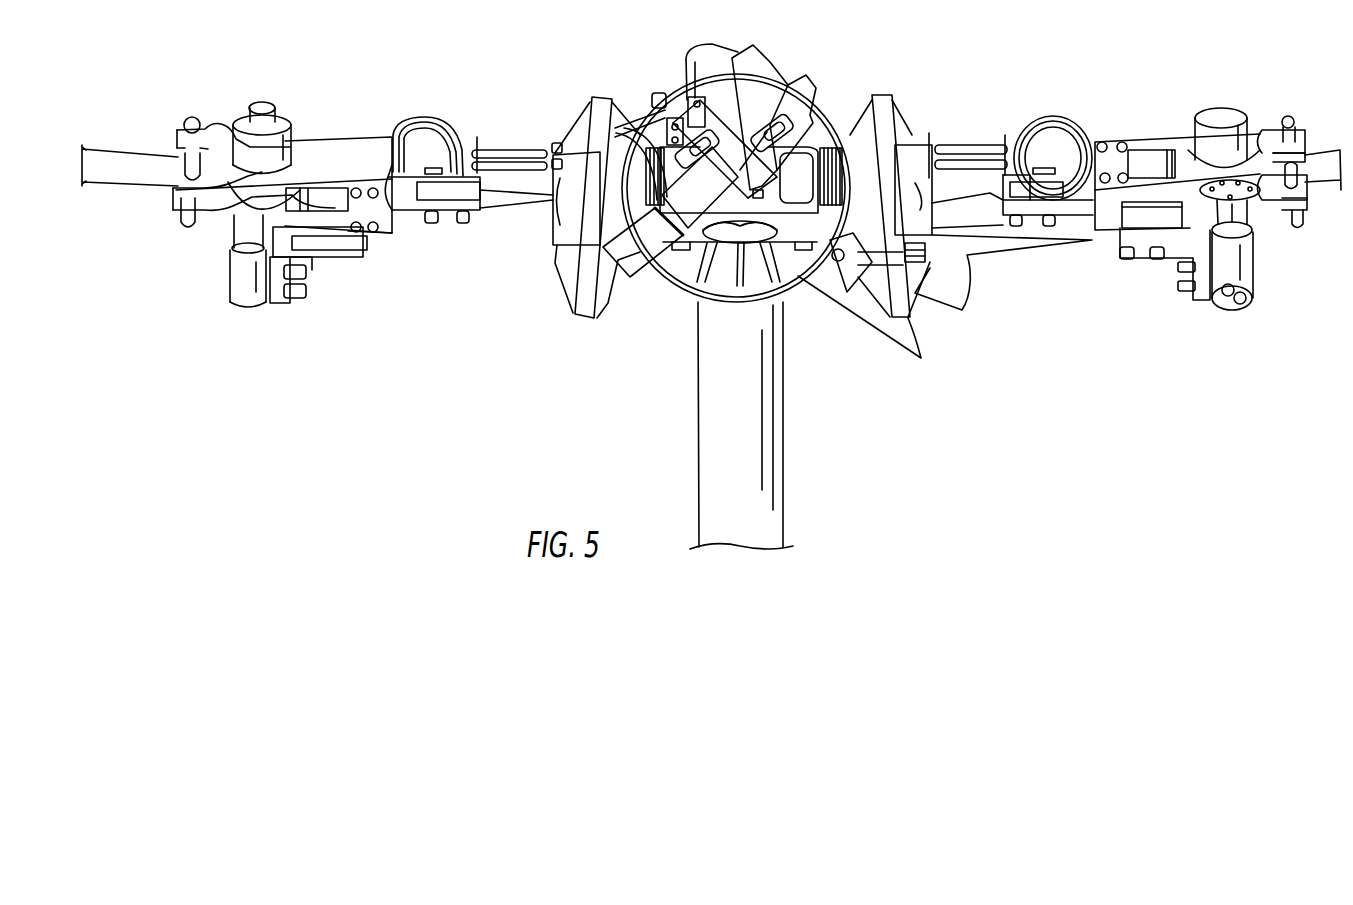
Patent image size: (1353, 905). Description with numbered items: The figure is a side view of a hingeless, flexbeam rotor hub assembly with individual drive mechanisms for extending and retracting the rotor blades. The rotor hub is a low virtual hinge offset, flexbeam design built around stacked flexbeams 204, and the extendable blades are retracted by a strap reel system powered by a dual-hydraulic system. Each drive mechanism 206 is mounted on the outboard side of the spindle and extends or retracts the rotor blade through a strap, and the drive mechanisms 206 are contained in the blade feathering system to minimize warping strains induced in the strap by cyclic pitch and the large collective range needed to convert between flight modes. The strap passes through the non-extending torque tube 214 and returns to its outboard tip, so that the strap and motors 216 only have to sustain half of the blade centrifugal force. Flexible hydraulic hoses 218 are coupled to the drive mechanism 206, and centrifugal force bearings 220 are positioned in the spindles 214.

The flexbeam 204 is at (483, 198).
The drive mechanism 206 is at (293, 342).
The non-extending torque tube 214 is at (178, 131).
The motor 216 is at (245, 287).
The flexible hydraulic hose 218 is at (512, 152).
The centrifugal force bearing 220 is at (335, 204).